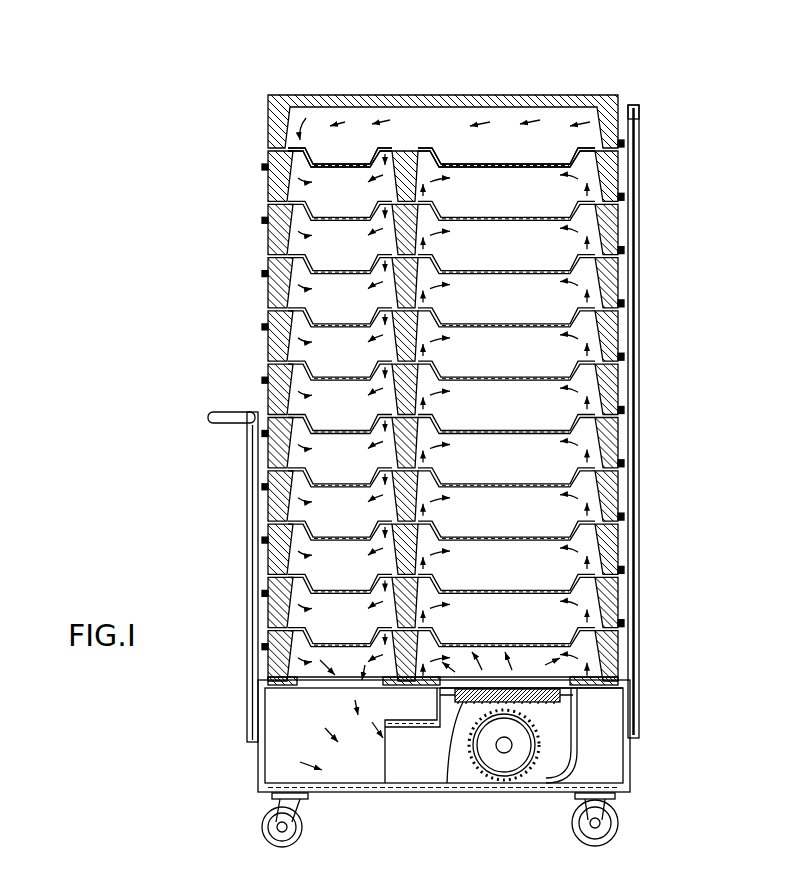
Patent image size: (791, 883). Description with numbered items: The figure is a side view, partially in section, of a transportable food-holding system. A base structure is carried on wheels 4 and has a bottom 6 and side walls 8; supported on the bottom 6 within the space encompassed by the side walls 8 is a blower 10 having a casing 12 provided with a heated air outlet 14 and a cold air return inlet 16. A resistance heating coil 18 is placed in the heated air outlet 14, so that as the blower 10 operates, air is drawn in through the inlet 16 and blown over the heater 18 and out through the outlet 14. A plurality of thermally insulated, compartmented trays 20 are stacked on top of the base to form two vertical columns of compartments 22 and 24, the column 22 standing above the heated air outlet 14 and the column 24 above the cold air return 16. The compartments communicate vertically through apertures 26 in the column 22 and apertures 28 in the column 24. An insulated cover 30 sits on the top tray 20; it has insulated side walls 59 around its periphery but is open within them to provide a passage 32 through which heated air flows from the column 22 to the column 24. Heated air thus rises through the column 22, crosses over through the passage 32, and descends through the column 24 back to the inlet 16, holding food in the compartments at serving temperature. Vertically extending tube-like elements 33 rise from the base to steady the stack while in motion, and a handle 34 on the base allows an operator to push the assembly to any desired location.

The wheels 4 is at (620, 824).
The bottom 6 is at (400, 793).
The side walls 8 is at (630, 770).
The blower 10 is at (504, 760).
The casing 12 is at (577, 735).
The heated air outlet 14 is at (578, 690).
The cold air return inlet 16 is at (305, 748).
The resistance heating coil 18 is at (462, 702).
The trays 20 is at (622, 262).
The column 22 is at (535, 146).
The column 24 is at (332, 146).
The apertures 26 is at (600, 576).
The apertures 28 is at (292, 548).
The insulated cover 30 is at (477, 96).
The passage 32 is at (400, 120).
The tube-like elements 33 is at (640, 376).
The handle 34 is at (222, 412).
The insulated side walls 59 is at (622, 115).